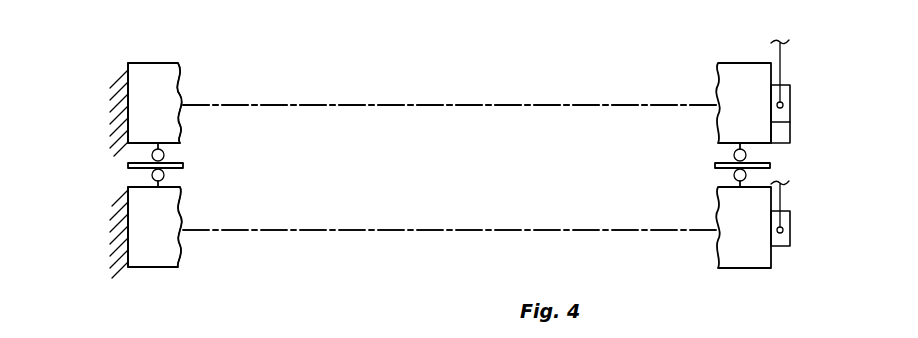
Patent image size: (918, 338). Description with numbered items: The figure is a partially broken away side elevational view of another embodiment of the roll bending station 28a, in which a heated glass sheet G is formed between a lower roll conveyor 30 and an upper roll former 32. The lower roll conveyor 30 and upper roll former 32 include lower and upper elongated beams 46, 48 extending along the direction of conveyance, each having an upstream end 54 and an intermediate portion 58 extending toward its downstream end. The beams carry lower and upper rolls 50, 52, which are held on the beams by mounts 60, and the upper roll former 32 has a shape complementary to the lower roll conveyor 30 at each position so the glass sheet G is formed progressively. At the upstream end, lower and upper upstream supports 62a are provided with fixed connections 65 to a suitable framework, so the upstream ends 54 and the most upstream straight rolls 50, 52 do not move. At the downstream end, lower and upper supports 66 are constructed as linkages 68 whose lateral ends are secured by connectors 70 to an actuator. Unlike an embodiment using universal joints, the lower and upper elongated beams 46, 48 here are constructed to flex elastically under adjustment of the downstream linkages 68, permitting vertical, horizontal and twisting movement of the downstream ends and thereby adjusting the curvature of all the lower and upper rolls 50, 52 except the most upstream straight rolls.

The roll bending station 28a is at (355, 72).
The upper elongated beam 48 is at (443, 96).
The intermediate portion 58 is at (486, 104).
The lower elongated beam 46 is at (385, 240).
The upstream end 54 is at (150, 70).
The fixed connection 65 is at (115, 108).
The upstream support 62a is at (118, 55).
The upper roll former 32 is at (122, 140).
The lower roll conveyor 30 is at (122, 190).
The upper roll 52 is at (152, 153).
The lower roll 50 is at (152, 178).
The mount 60 is at (163, 148).
The glass sheet G is at (185, 165).
The downstream support 66 is at (798, 80).
The linkage 68 is at (790, 105).
The connector 70 is at (782, 58).